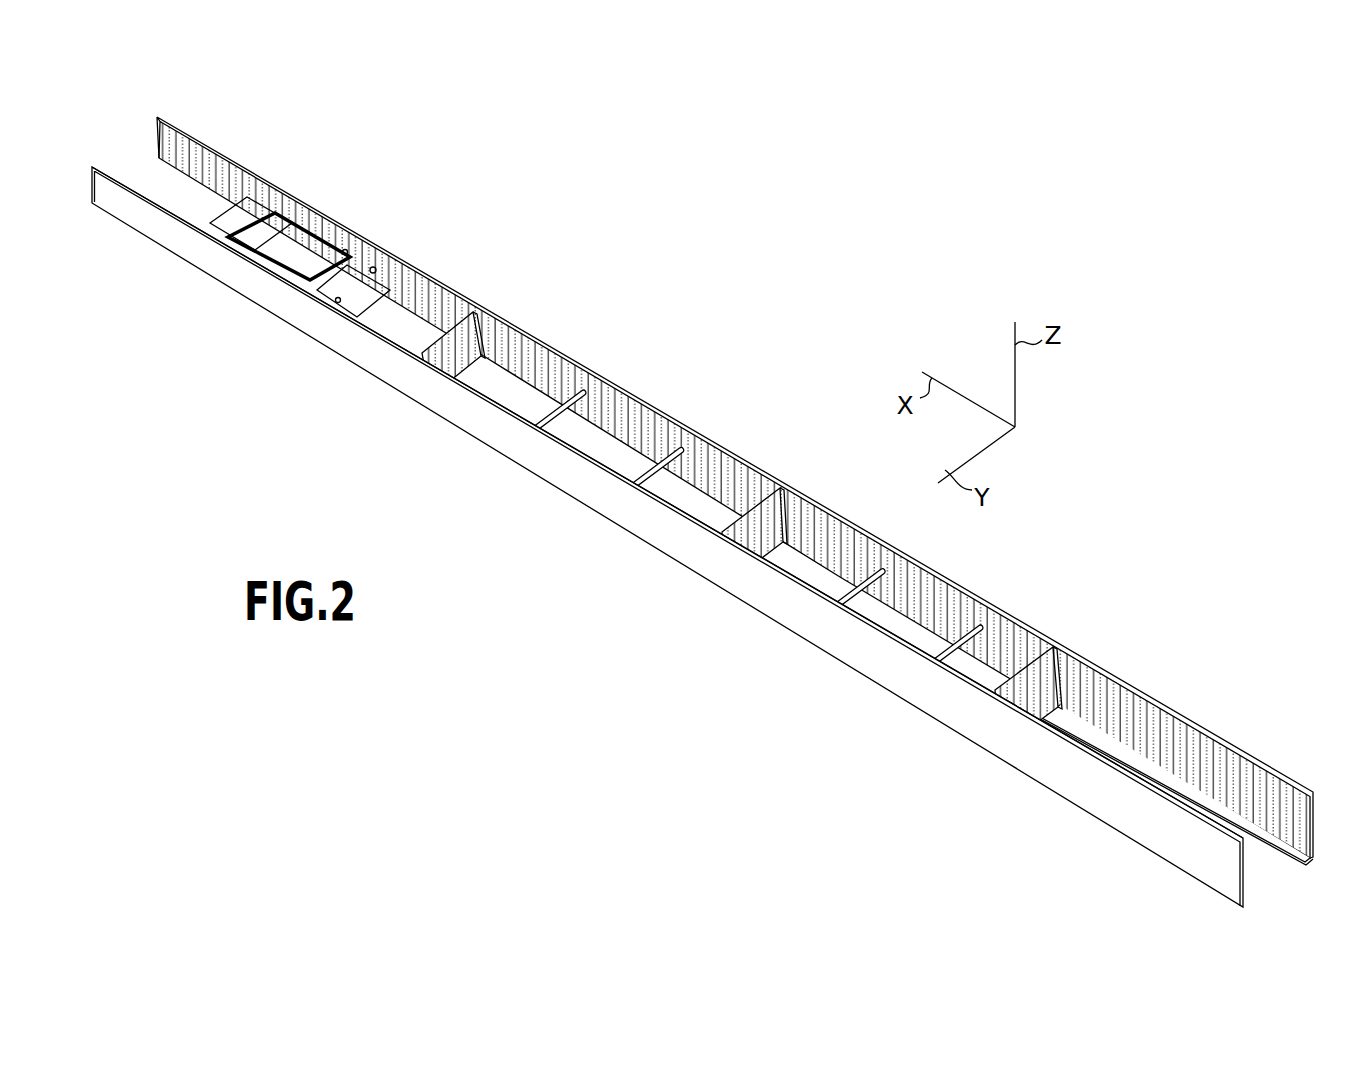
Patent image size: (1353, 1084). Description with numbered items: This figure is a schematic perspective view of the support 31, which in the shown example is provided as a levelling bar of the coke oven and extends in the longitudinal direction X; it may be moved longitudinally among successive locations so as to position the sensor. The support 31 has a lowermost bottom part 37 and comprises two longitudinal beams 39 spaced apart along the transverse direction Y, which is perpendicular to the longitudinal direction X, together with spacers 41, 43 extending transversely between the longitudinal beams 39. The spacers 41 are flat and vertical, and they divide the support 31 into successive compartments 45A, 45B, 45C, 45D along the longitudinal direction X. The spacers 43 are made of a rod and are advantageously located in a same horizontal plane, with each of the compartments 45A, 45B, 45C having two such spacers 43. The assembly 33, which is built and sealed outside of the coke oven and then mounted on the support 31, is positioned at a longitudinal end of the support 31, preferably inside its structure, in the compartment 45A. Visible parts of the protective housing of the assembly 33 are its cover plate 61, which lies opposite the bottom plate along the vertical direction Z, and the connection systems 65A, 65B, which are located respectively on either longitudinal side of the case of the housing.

The support 31 is at (1015, 578).
The assembly 33 is at (367, 218).
The bottom part 37 is at (1150, 853).
The longitudinal beams 39 is at (1113, 753).
The spacers 41 is at (463, 312).
The spacers 43 is at (670, 445).
The compartment 45A is at (270, 333).
The compartment 45B is at (525, 497).
The compartment 45C is at (825, 662).
The compartment 45D is at (1050, 805).
The cover plate 61 is at (303, 245).
The connection system 65A is at (253, 157).
The connection system 65B is at (390, 270).